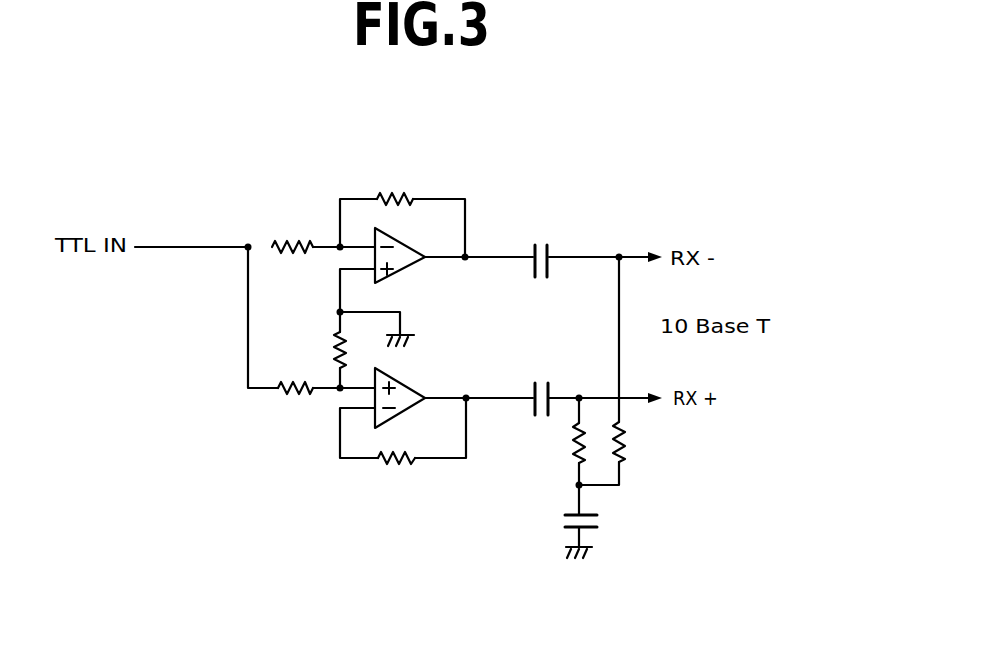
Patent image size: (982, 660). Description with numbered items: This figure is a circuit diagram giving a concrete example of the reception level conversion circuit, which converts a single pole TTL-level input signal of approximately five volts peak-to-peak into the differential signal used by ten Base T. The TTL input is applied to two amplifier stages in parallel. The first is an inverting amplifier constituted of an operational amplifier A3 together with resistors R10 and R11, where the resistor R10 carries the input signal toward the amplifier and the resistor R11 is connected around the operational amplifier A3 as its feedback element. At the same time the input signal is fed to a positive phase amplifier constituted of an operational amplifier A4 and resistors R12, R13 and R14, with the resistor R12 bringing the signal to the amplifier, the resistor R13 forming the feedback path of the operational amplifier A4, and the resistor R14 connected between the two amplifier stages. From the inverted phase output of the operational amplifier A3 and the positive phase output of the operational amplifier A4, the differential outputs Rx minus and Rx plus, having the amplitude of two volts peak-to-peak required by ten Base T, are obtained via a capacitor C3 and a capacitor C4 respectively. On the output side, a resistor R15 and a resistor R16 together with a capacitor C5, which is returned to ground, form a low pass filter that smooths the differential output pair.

The resistor R10 is at (294, 236).
The resistor R11 is at (395, 192).
The resistor R12 is at (295, 397).
The resistor R13 is at (400, 462).
The resistor R14 is at (333, 348).
The resistor R15 is at (571, 444).
The resistor R16 is at (630, 445).
The capacitor C3 is at (540, 242).
The capacitor C4 is at (543, 380).
The capacitor C5 is at (602, 518).
The operational amplifier A3 is at (408, 266).
The operational amplifier A4 is at (410, 386).